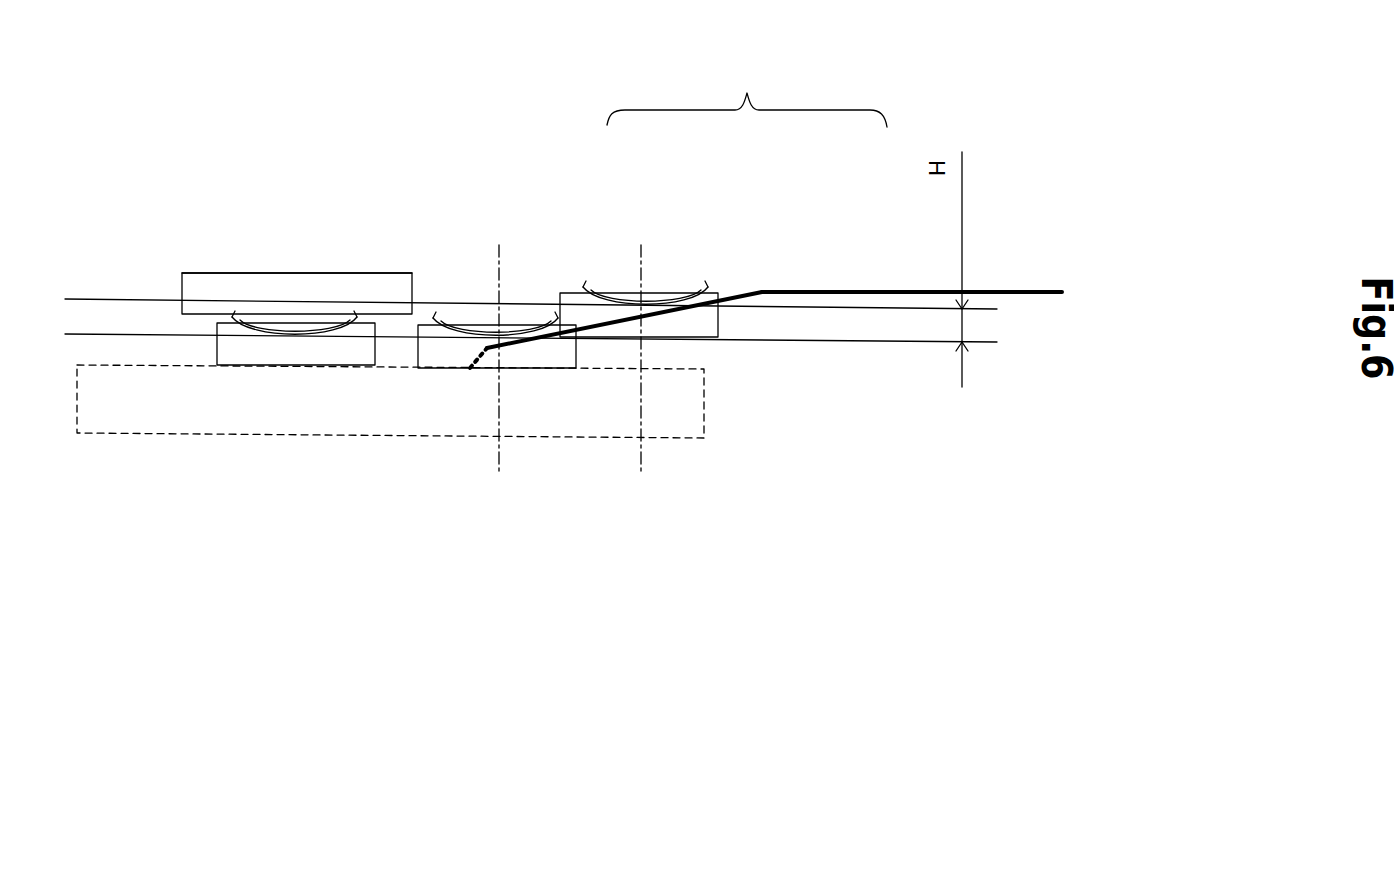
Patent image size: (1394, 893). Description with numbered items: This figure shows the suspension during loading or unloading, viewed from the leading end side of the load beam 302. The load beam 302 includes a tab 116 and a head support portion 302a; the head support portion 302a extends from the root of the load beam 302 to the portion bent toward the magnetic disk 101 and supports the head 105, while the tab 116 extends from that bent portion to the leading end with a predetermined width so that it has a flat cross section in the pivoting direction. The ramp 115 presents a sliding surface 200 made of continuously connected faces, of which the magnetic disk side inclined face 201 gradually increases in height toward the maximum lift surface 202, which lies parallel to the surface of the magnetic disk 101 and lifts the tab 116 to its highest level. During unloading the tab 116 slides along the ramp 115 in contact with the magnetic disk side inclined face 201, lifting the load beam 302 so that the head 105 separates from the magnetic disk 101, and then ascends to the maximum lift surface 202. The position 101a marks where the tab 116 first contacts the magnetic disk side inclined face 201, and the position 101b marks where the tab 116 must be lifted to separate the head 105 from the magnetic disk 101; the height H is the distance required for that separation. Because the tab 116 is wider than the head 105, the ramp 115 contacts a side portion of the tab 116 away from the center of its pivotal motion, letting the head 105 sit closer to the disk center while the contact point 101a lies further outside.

The magnetic disk 101 is at (108, 422).
The first contact position 101a is at (492, 447).
The lift position 101b is at (637, 443).
The head 105 is at (207, 340).
The ramp 115 is at (1032, 272).
The tab 116 is at (298, 337).
The sliding surface 200 is at (730, 186).
The magnetic disk side inclined face 201 is at (730, 293).
The maximum lift surface 202 is at (847, 291).
The load beam 302 is at (218, 238).
The head support portion 302a is at (402, 273).